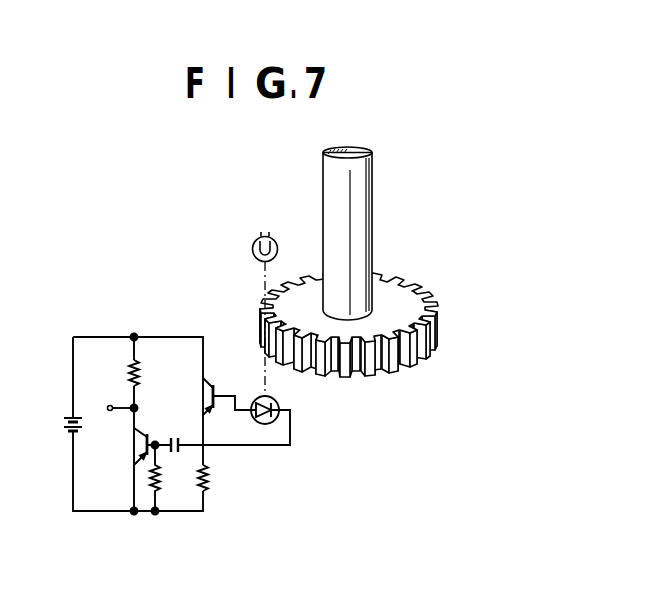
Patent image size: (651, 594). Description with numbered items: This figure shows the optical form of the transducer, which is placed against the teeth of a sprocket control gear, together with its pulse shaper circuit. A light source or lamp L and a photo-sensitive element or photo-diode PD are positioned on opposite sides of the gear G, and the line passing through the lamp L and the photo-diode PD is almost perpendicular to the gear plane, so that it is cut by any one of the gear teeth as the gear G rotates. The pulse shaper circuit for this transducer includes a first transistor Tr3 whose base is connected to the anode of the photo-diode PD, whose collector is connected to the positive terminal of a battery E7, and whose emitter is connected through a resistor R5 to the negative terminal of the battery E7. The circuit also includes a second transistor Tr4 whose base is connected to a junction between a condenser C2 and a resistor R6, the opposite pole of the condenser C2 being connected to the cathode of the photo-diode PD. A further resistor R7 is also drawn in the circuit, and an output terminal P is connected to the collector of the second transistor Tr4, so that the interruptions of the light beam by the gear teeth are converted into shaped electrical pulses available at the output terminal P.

The gear G is at (304, 282).
The lamp L is at (252, 248).
The photo-diode PD is at (292, 392).
The first transistor Tr3 is at (214, 396).
The second transistor Tr4 is at (133, 446).
The resistor R5 is at (213, 480).
The resistor R6 is at (165, 478).
The resistor R7 is at (144, 375).
The condenser C2 is at (179, 432).
The battery E7 is at (64, 423).
The output terminal P is at (117, 404).